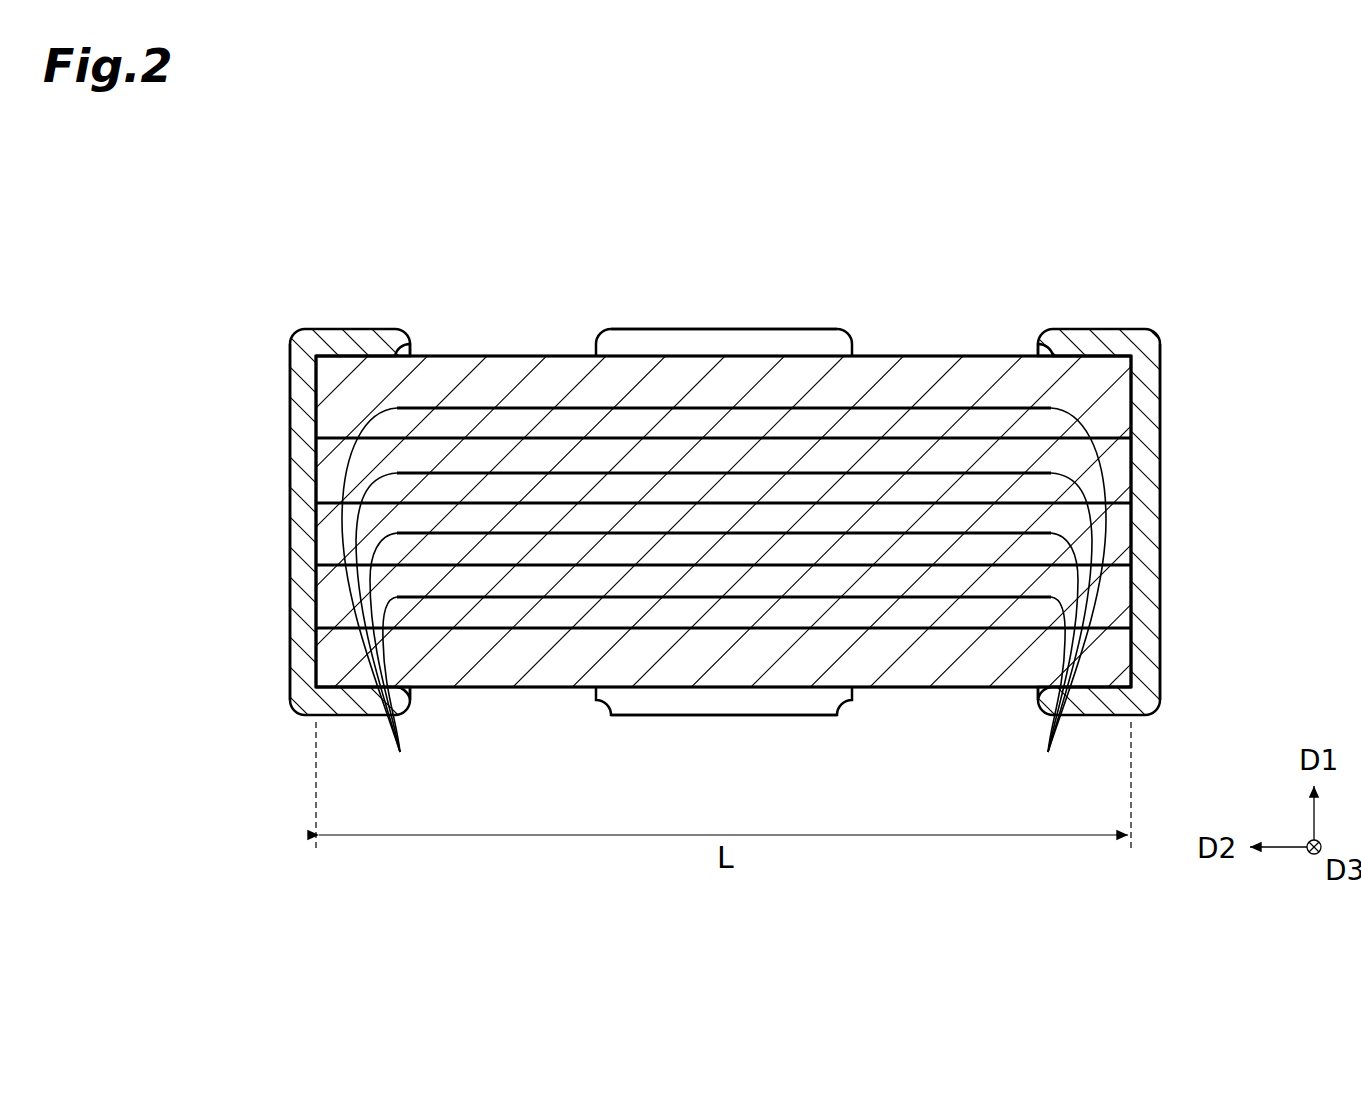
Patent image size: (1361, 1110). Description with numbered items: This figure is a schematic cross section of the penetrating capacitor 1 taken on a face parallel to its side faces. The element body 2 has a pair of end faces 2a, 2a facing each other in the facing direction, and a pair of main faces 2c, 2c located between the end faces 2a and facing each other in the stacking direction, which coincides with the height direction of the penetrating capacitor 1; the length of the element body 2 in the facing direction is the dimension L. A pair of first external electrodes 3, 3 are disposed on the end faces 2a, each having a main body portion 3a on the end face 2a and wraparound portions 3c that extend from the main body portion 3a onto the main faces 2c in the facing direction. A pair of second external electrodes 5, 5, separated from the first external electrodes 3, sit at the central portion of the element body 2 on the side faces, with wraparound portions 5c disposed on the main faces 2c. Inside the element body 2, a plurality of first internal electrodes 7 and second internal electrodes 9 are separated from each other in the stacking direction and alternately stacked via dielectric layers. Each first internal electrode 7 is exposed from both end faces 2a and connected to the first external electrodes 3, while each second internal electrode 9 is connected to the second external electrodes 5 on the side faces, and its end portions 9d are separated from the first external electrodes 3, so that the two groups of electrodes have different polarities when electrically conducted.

The penetrating capacitor 1 is at (796, 207).
The element body 2 is at (891, 352).
The end face 2a is at (316, 514).
The main face 2c is at (744, 356).
The first external electrode 3 is at (287, 377).
The main body portion 3a is at (290, 442).
The wraparound portion 3c is at (356, 329).
The second external electrode 5 is at (669, 322).
The wraparound portion 5c is at (806, 329).
The first internal electrode 7 is at (530, 438).
The second internal electrode 9 is at (932, 408).
The end portion 9d is at (724, 600).